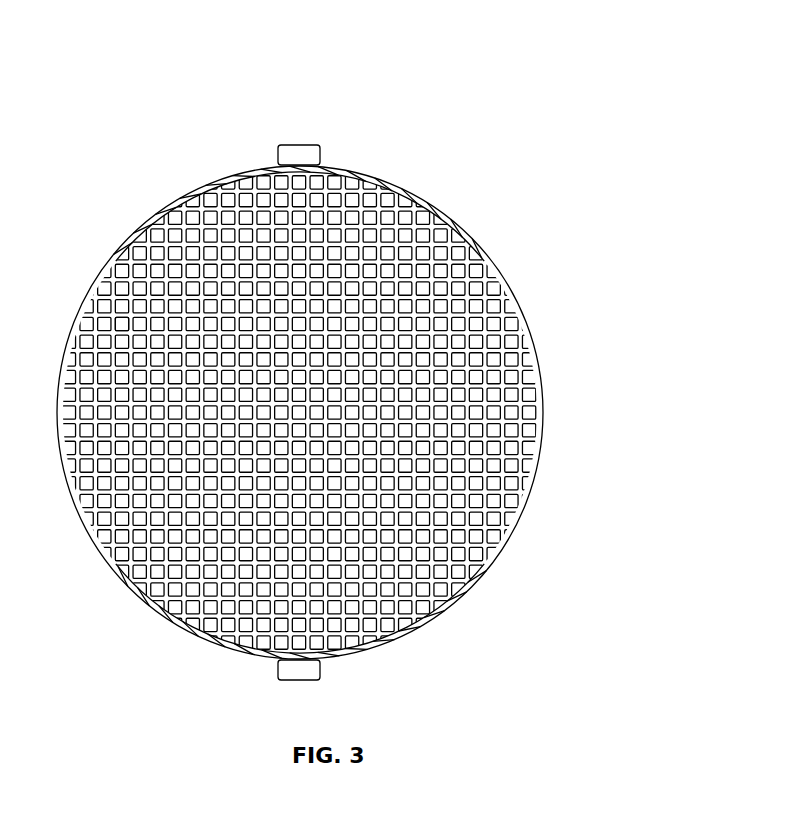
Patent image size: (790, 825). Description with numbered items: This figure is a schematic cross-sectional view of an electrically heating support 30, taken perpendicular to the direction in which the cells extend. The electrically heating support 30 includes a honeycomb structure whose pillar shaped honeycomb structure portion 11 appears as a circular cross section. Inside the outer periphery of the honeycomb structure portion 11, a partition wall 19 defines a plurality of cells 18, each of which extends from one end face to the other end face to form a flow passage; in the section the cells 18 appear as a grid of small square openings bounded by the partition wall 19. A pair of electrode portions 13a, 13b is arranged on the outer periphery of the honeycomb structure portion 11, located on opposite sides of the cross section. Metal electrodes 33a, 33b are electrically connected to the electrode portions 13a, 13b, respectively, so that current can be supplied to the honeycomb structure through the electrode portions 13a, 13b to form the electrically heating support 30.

The electrically heating support 30 is at (335, 376).
The pillar shaped honeycomb structure portion 11 is at (542, 367).
The electrode portion 13a is at (440, 208).
The electrode portion 13b is at (447, 610).
The cells 18 is at (87, 360).
The partition wall 19 is at (120, 332).
The metal electrode 33a is at (277, 158).
The metal electrode 33b is at (277, 668).